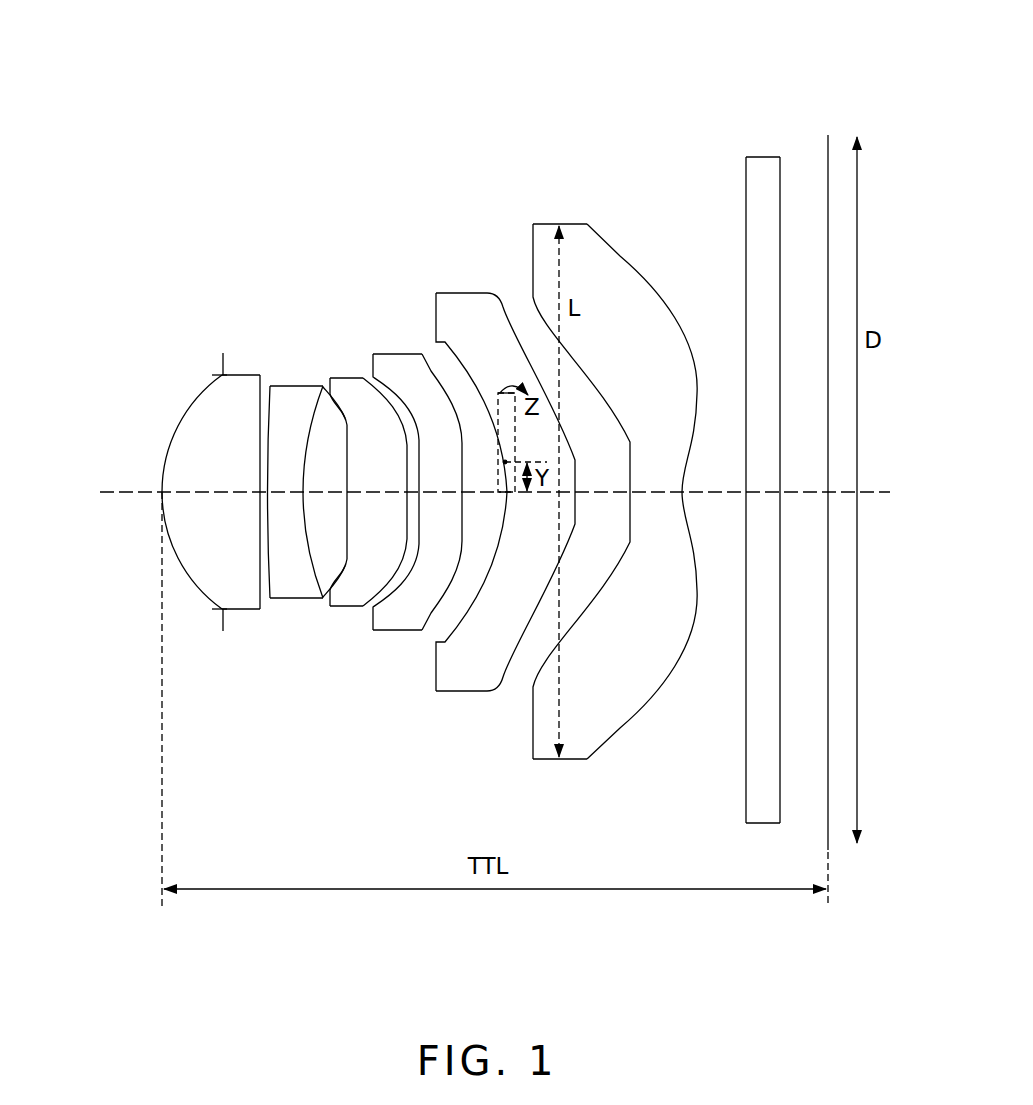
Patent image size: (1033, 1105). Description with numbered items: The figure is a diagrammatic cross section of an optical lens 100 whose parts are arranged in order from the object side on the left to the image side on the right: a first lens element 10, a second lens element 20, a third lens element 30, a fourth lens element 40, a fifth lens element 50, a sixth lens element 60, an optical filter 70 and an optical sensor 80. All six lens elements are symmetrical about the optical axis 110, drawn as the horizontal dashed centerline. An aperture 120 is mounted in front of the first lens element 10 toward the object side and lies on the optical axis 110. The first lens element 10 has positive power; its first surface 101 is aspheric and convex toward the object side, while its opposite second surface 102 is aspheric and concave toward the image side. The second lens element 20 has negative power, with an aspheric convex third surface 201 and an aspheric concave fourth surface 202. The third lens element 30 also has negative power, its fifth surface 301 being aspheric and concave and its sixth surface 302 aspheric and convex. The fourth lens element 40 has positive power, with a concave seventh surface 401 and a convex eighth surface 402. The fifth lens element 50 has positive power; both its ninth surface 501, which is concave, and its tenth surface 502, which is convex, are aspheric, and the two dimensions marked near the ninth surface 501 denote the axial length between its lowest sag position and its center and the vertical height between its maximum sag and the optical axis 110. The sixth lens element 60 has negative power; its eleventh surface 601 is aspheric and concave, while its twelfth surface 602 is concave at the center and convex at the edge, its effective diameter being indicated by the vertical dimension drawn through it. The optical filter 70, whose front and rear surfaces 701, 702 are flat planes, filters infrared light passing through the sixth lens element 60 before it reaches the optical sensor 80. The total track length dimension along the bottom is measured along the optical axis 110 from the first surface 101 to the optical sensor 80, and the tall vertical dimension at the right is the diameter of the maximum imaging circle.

The optical lens 100 is at (383, 40).
The first lens element 10 is at (205, 536).
The first surface 101 is at (198, 400).
The second surface 102 is at (262, 592).
The optical axis 110 is at (145, 493).
The aperture 120 is at (223, 362).
The second lens element 20 is at (281, 511).
The third surface 201 is at (263, 383).
The fourth surface 202 is at (330, 595).
The third lens element 30 is at (357, 489).
The fifth surface 301 is at (326, 388).
The sixth surface 302 is at (370, 598).
The fourth lens element 40 is at (396, 446).
The seventh surface 401 is at (375, 602).
The eighth surface 402 is at (430, 372).
The fifth lens element 50 is at (481, 475).
The ninth surface 501 is at (440, 640).
The tenth surface 502 is at (505, 680).
The sixth lens element 60 is at (601, 501).
The eleventh surface 601 is at (533, 297).
The twelfth surface 602 is at (617, 730).
The optical filter 70 is at (757, 458).
The object-side surface of filter 701 is at (746, 785).
The image-side surface of filter 702 is at (780, 205).
The optical sensor 80 is at (827, 228).